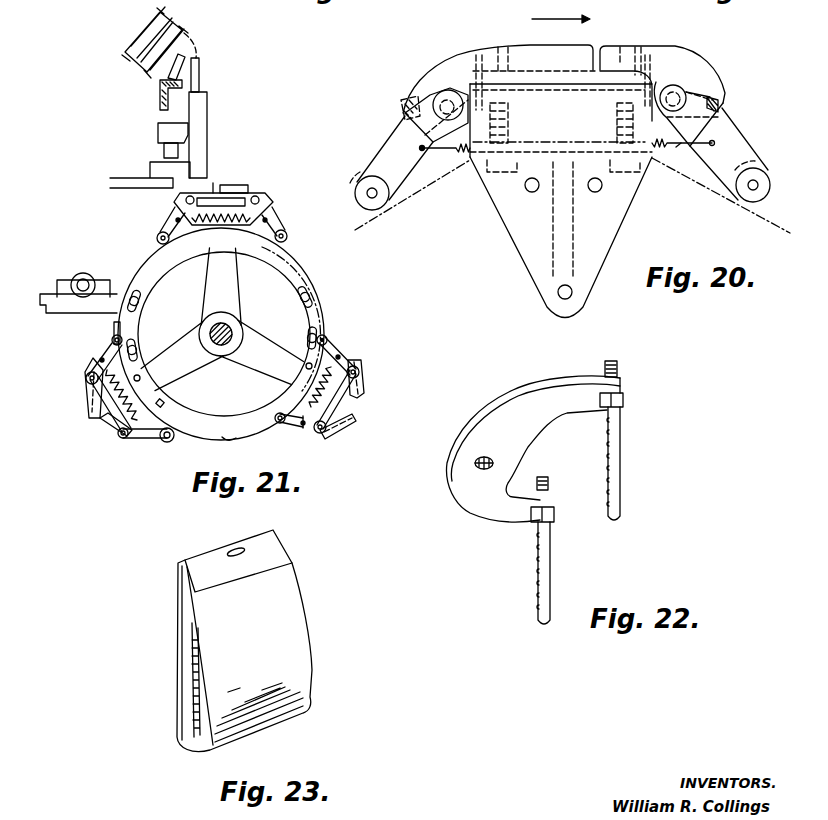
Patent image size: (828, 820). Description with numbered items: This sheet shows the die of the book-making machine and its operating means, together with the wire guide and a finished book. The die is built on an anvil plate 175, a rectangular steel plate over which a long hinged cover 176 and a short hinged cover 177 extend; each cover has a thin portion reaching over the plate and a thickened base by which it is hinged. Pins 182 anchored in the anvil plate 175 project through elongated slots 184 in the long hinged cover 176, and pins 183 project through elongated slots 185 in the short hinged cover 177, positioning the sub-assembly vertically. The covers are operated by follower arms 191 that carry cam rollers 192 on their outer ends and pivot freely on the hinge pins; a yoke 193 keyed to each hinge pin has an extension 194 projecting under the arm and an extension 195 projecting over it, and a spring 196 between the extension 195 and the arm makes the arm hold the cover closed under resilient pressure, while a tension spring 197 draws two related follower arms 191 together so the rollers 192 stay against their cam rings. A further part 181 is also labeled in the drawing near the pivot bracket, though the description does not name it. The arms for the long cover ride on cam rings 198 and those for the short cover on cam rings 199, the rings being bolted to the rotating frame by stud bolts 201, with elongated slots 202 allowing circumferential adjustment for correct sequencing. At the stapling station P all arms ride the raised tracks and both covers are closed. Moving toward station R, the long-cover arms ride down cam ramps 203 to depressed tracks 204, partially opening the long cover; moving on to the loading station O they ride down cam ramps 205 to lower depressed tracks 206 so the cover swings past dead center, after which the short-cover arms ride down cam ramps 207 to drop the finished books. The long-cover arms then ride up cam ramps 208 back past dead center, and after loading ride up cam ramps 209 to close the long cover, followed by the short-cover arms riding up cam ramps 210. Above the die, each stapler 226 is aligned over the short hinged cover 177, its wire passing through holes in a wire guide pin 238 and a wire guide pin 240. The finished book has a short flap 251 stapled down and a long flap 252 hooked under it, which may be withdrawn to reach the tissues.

In FIG. 20, the anvil plate 175 is at (532, 127).
In FIG. 21, the long hinged cover 176 is at (250, 190).
In FIG. 21, the short hinged cover 177 is at (213, 186).
In FIG. 20, the pivot bracket 181 is at (663, 78).
In FIG. 20, the pins 182 is at (480, 58).
In FIG. 20, the pins 183 is at (641, 47).
In FIG. 20, the elongated slots 184 is at (507, 57).
In FIG. 20, the elongated slots 185 is at (621, 50).
In FIG. 20, the follower arms 191 is at (388, 162).
In FIG. 21, the follower arms 191 is at (178, 220).
In FIG. 20, the cam rollers 192 is at (355, 190).
In FIG. 21, the cam rollers 192 is at (157, 238).
In FIG. 20, the yoke 193 is at (700, 128).
In FIG. 20, the extension 194 is at (681, 146).
In FIG. 20, the extension 195 is at (719, 104).
In FIG. 20, the spring 196 is at (450, 123).
In FIG. 20, the tension spring 197 is at (467, 162).
In FIG. 21, the tension spring 197 is at (222, 217).
In FIG. 21, the cam rings 198 is at (306, 327).
In FIG. 21, the cam rings 199 is at (195, 433).
In FIG. 21, the stud bolts 201 is at (337, 293).
In FIG. 21, the elongated slots 202 is at (316, 307).
In FIG. 21, the cam ramps 203 is at (118, 327).
In FIG. 21, the depressed tracks 204 is at (133, 360).
In FIG. 21, the cam ramps 205 is at (139, 378).
In FIG. 21, the lower depressed tracks 206 is at (162, 405).
In FIG. 21, the cam ramps 207 is at (230, 436).
In FIG. 21, the cam ramps 208 is at (228, 428).
In FIG. 21, the cam ramps 209 is at (310, 380).
In FIG. 21, the cam ramps 210 is at (267, 243).
In FIG. 21, the staplers 226 is at (204, 105).
In FIG. 22, the wire guide pin 238 is at (536, 555).
In FIG. 22, the wire guide pin 240 is at (621, 449).
In FIG. 23, the short flap 251 is at (275, 545).
In FIG. 23, the long flap 252 is at (292, 613).
In FIG. 21, the stapling station P is at (227, 144).
In FIG. 21, the unloading station R is at (88, 428).
In FIG. 21, the loading station O is at (366, 403).